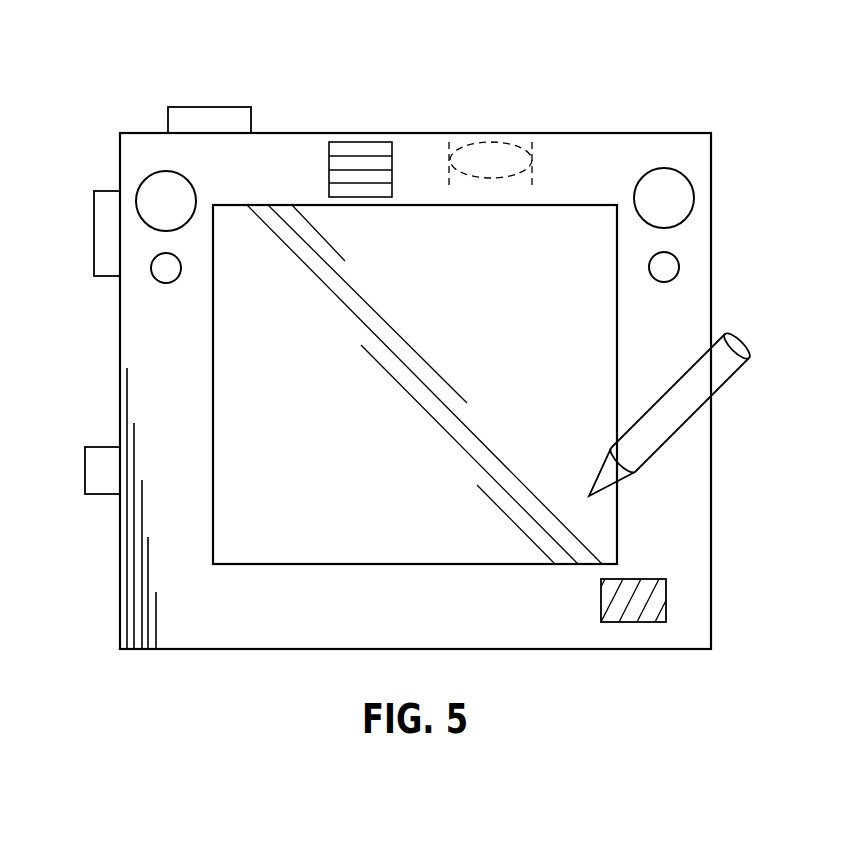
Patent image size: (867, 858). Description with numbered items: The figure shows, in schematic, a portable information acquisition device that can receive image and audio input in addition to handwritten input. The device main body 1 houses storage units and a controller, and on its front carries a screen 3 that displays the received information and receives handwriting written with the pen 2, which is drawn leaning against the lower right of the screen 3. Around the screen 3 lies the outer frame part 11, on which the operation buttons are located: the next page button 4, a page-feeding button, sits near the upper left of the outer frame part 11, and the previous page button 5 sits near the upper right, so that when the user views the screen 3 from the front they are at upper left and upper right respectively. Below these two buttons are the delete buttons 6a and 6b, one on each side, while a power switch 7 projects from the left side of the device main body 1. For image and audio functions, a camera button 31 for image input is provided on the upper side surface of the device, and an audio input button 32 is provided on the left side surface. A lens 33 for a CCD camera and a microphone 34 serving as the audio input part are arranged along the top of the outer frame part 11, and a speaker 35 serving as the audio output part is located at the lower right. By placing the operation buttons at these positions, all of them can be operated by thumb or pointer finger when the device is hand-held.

The device main body 1 is at (98, 84).
The pen 2 is at (748, 349).
The screen 3 is at (485, 332).
The next page button 4 is at (153, 190).
The previous page button 5 is at (685, 193).
The delete button 6a is at (155, 270).
The delete button 6b is at (673, 267).
The power switch 7 is at (96, 475).
The outer frame part 11 is at (278, 143).
The camera button 31 is at (207, 118).
The audio input button 32 is at (105, 230).
The lens 33 is at (487, 155).
The microphone 34 is at (367, 150).
The speaker 35 is at (666, 600).